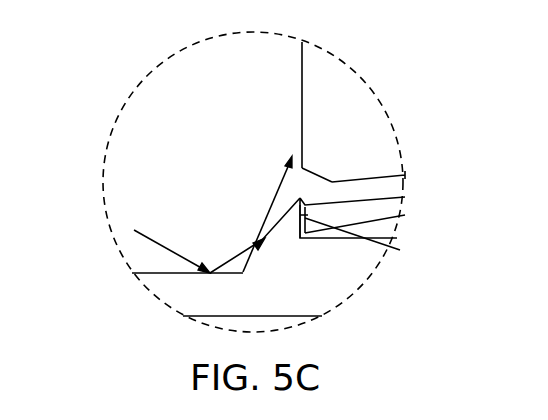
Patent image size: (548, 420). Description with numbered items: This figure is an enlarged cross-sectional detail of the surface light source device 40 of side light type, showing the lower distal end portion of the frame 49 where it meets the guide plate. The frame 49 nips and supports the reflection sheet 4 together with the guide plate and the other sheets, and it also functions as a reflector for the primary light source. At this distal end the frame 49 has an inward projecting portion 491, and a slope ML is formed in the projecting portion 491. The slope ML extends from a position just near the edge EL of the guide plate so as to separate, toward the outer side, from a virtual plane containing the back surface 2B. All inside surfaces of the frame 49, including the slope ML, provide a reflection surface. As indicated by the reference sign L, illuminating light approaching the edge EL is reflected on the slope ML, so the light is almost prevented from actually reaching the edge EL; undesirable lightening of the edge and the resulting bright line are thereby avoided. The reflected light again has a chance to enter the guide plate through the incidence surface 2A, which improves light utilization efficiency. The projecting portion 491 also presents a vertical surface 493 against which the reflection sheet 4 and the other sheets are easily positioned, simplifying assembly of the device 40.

The surface light source device 40 is at (119, 68).
The incidence surface 2A is at (302, 77).
The edge EL is at (313, 172).
The back surface 2B is at (392, 170).
The reflection sheet 4 is at (396, 205).
The vertical surface 493 is at (400, 250).
The inward projecting portion 491 is at (293, 222).
The frame 49 is at (365, 268).
The slope ML is at (243, 273).
The illuminating light L is at (158, 238).